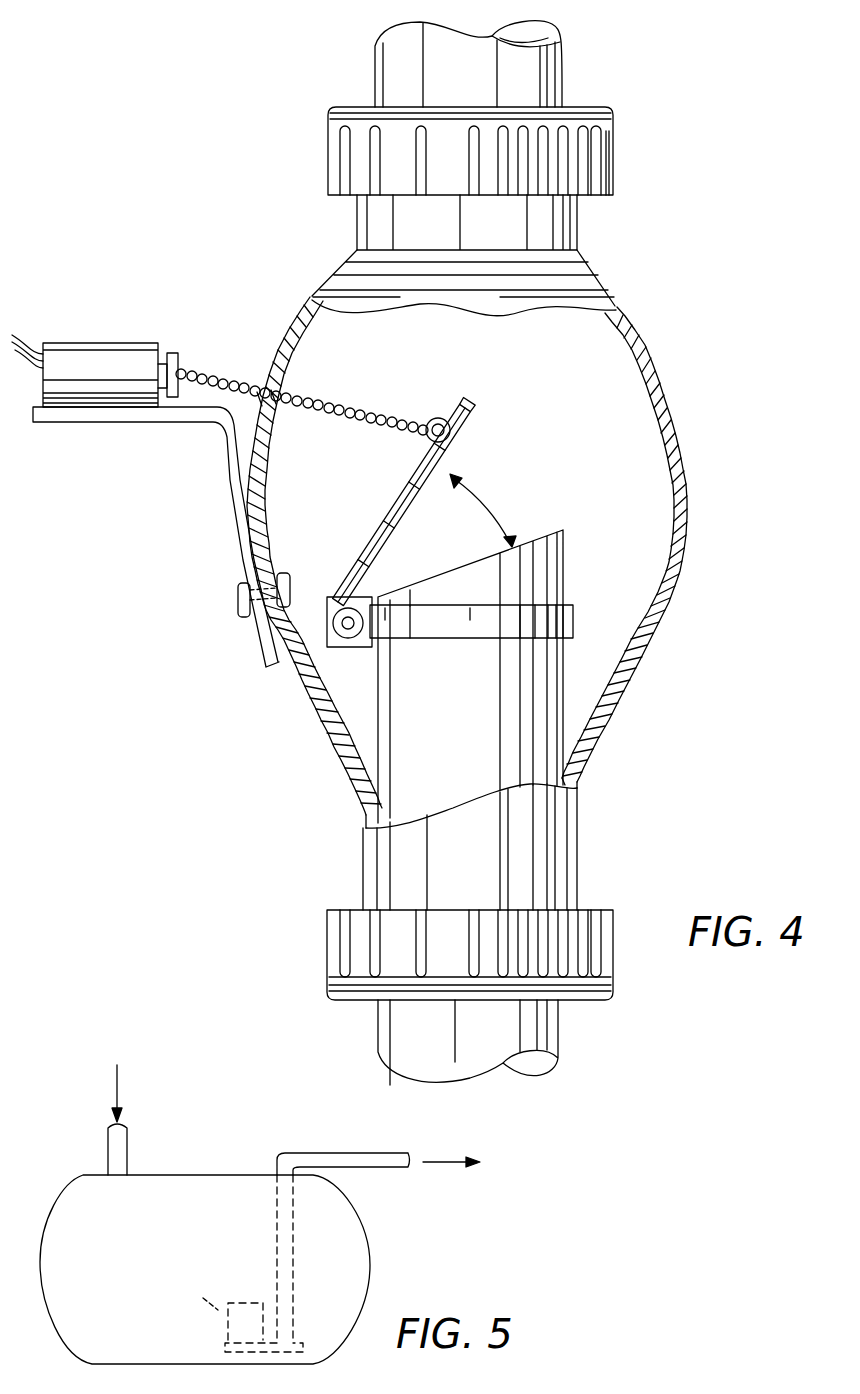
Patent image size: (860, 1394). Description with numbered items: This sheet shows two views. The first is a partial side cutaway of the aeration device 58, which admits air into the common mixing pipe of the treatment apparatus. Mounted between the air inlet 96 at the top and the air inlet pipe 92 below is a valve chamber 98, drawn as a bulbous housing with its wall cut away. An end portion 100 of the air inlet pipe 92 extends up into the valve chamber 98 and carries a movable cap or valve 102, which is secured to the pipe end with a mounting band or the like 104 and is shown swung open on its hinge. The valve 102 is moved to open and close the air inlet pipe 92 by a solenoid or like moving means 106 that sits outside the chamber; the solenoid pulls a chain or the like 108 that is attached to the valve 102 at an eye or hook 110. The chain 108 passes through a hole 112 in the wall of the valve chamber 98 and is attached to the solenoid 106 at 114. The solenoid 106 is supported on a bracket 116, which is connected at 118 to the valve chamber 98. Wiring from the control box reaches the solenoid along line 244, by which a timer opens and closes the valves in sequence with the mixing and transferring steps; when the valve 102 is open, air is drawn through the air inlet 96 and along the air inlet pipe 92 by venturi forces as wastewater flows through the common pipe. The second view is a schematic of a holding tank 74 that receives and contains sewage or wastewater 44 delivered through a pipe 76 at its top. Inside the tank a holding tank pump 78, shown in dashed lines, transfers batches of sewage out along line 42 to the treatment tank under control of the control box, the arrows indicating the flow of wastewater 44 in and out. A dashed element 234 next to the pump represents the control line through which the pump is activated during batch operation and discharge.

In FIG. 4, the air inlet 96 is at (549, 76).
In FIG. 4, the air inlet pipe 92 is at (548, 1027).
In FIG. 4, the valve chamber 98 is at (630, 432).
In FIG. 4, the aeration device 58 is at (622, 698).
In FIG. 4, the end portion 100 is at (487, 715).
In FIG. 4, the valve 102 is at (387, 519).
In FIG. 4, the mounting band 104 is at (552, 623).
In FIG. 4, the solenoid 106 is at (117, 357).
In FIG. 4, the chain 108 is at (380, 414).
In FIG. 4, the eye or hook 110 is at (443, 419).
In FIG. 4, the hole 112 is at (260, 385).
In FIG. 4, the chain attachment point 114 is at (179, 361).
In FIG. 4, the bracket 116 is at (103, 413).
In FIG. 4, the bracket connection 118 is at (241, 601).
In FIG. 4, the line 244 is at (27, 334).
In FIG. 5, the holding tank 74 is at (48, 1215).
In FIG. 5, the pipe 76 is at (130, 1143).
In FIG. 5, the sewage line 42 is at (403, 1168).
In FIG. 5, the wastewater 44 is at (120, 1075).
In FIG. 5, the holding tank pump 78 is at (242, 1300).
In FIG. 5, the line 234 is at (228, 1313).